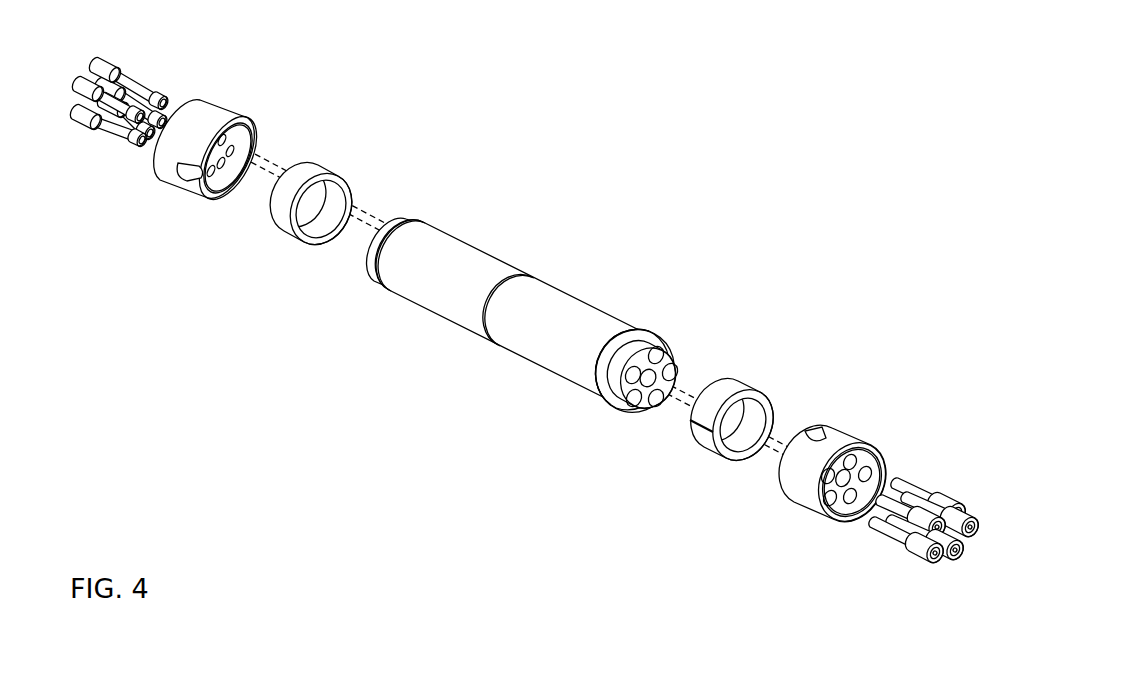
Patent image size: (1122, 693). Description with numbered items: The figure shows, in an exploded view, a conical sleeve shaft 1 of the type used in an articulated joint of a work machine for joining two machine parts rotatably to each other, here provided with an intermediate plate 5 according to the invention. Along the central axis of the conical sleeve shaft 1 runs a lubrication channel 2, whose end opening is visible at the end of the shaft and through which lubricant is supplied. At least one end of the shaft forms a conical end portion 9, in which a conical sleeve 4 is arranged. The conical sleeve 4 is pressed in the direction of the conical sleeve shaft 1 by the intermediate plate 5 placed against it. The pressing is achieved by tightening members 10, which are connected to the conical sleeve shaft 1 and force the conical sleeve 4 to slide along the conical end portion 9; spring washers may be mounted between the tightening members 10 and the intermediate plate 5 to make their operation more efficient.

The conical sleeve shaft 1 is at (473, 247).
The lubrication channel 2 is at (596, 393).
The conical sleeve 4 is at (740, 377).
The intermediate plate 5 is at (830, 433).
The conical end portion 9 is at (661, 345).
The tightening member 10 is at (890, 538).